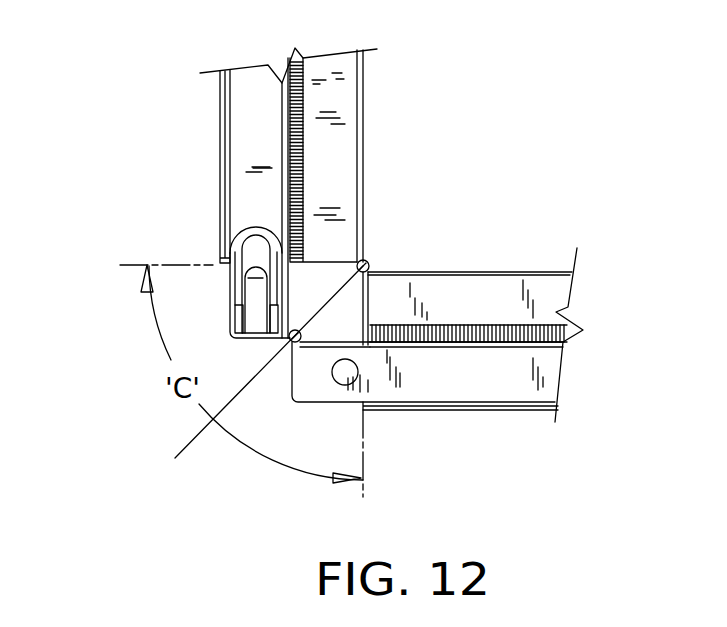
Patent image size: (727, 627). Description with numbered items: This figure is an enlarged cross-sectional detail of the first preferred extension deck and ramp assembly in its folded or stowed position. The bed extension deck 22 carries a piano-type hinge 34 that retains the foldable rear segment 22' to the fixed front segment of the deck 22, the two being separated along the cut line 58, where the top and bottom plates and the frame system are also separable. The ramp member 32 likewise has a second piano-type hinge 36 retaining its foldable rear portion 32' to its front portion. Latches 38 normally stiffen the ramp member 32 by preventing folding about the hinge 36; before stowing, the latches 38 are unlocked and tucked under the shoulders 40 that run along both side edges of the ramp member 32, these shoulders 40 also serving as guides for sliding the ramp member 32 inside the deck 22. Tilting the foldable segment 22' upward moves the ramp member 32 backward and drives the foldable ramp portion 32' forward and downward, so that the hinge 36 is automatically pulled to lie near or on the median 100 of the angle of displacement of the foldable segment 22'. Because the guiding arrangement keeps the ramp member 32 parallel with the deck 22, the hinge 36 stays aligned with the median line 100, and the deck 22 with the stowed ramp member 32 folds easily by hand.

The foldable rear portion 32' is at (194, 166).
The shoulder 40 is at (283, 137).
The latch 38 is at (248, 226).
The foldable rear segment 22' is at (384, 156).
The piano-type hinge 34 is at (368, 262).
The cut line 58 is at (377, 310).
The bed extension deck 22 is at (475, 311).
The median 100 is at (190, 440).
The piano-type hinge 36 is at (282, 366).
The ramp member 32 is at (427, 428).